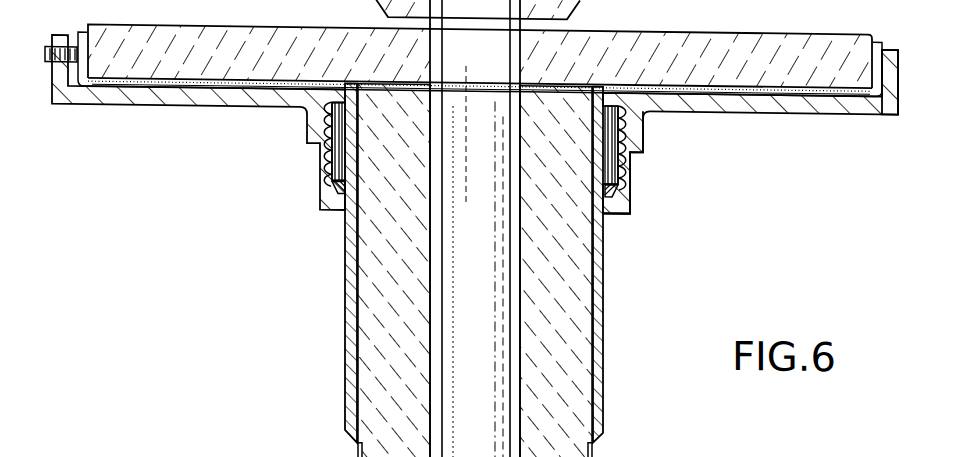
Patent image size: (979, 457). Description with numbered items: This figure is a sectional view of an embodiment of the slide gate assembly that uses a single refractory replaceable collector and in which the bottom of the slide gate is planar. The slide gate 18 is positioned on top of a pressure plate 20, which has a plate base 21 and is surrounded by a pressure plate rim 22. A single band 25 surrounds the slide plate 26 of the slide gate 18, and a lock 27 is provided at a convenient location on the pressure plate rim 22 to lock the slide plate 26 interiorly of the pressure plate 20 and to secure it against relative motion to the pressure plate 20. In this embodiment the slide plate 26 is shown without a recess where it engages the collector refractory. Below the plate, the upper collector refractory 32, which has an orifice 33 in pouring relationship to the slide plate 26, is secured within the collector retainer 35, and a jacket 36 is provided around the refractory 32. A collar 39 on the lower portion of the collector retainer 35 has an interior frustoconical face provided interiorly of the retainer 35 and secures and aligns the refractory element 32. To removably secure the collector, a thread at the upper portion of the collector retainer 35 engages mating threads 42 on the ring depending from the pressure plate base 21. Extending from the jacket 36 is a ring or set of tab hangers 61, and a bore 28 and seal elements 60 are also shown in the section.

The slide gate 18 is at (686, 18).
The pressure plate 20 is at (897, 29).
The plate base 21 is at (787, 104).
The pressure plate rim 22 is at (898, 90).
The band 25 is at (117, 454).
The slide plate 26 is at (177, 55).
The lock 27 is at (54, 454).
The bore 28 is at (486, 55).
The upper collector refractory 32 is at (363, 332).
The orifice 33 is at (485, 255).
The collector retainer 35 is at (627, 189).
The jacket 36 is at (605, 389).
The collar 39 is at (630, 207).
The mating threads 42 is at (643, 122).
The bushing 60 is at (335, 193).
The tab hangers 61 is at (330, 209).